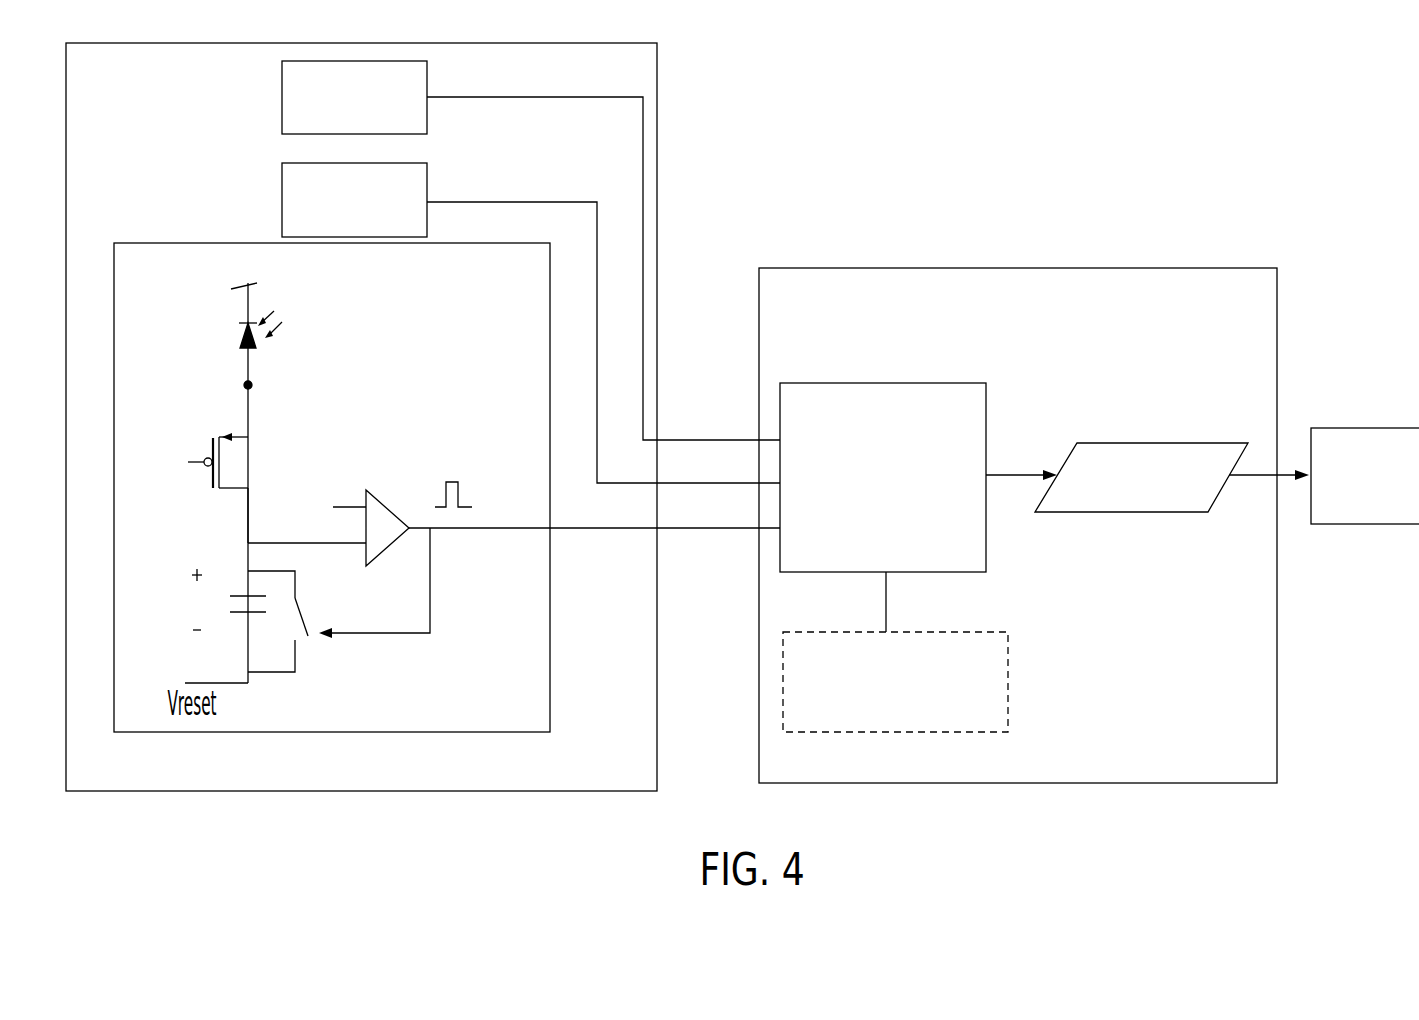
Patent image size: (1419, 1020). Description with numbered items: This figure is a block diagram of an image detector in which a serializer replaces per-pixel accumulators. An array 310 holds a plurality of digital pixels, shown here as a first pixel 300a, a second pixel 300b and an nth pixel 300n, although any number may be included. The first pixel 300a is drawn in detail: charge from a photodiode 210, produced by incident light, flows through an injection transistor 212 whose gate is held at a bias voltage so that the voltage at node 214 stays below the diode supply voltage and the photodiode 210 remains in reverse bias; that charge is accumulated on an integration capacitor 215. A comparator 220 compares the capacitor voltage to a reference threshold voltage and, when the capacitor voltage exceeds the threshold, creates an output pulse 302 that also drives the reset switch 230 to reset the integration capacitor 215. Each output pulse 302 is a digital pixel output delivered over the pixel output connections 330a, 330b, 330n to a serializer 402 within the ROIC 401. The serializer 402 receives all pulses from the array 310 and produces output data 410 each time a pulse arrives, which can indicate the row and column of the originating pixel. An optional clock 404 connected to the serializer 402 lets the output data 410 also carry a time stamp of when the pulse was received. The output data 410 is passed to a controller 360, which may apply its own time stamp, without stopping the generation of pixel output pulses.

The photodiode 210 is at (240, 336).
The injection transistor 212 is at (210, 440).
The node 214 is at (244, 385).
The integration capacitor 215 is at (232, 595).
The comparator 220 is at (388, 505).
The reset switch 230 is at (296, 652).
The output pulse 302 is at (452, 480).
The first pixel 300a is at (404, 343).
The second pixel 300b is at (332, 220).
The nth pixel 300n is at (332, 116).
The array 310 is at (659, 706).
The pixel output connection 330a is at (617, 532).
The pixel output connection 330b is at (583, 203).
The pixel output connection 330n is at (570, 100).
The ROIC 401 is at (972, 268).
The serializer 402 is at (865, 495).
The clock 404 is at (882, 695).
The output data 410 is at (1127, 495).
The controller 360 is at (1392, 494).